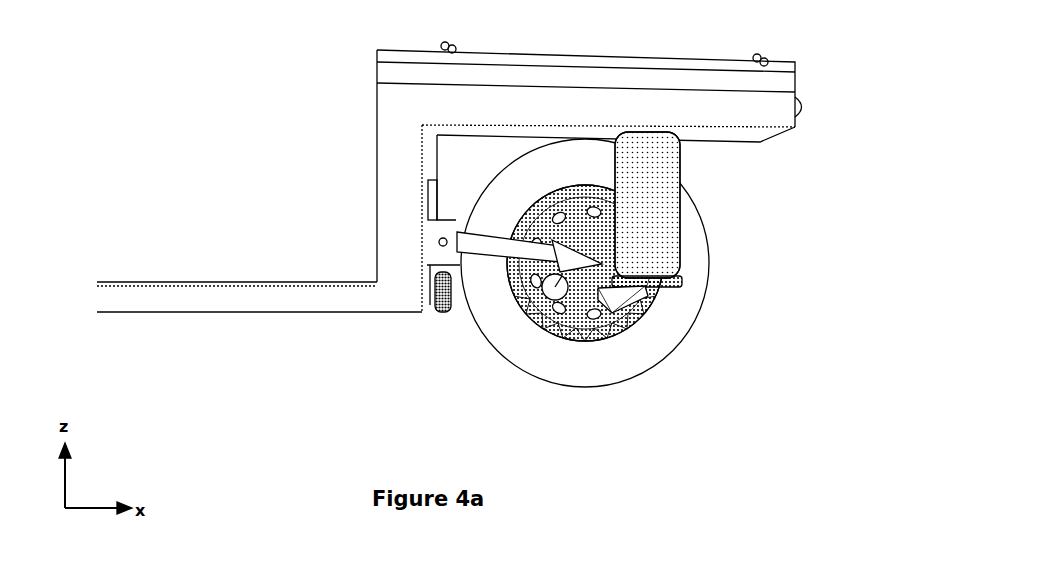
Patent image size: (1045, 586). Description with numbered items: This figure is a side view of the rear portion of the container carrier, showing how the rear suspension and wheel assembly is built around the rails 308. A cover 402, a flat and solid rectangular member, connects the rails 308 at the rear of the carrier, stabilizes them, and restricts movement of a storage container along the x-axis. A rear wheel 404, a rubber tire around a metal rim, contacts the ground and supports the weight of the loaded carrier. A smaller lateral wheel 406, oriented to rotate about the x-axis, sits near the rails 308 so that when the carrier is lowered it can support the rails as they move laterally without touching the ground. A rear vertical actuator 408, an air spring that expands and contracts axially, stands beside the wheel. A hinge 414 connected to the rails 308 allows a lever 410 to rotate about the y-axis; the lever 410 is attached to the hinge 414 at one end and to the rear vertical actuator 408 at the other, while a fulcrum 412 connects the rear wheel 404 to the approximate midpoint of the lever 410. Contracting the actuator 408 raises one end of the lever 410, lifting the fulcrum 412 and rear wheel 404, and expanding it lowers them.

The rails 308 is at (106, 296).
The cover 402 is at (797, 62).
The rear wheels 404 is at (697, 307).
The lateral wheels 406 is at (437, 305).
The rear vertical actuators 408 is at (668, 235).
The lever 410 is at (600, 298).
The fulcrum 412 is at (558, 298).
The hinge 414 is at (440, 241).